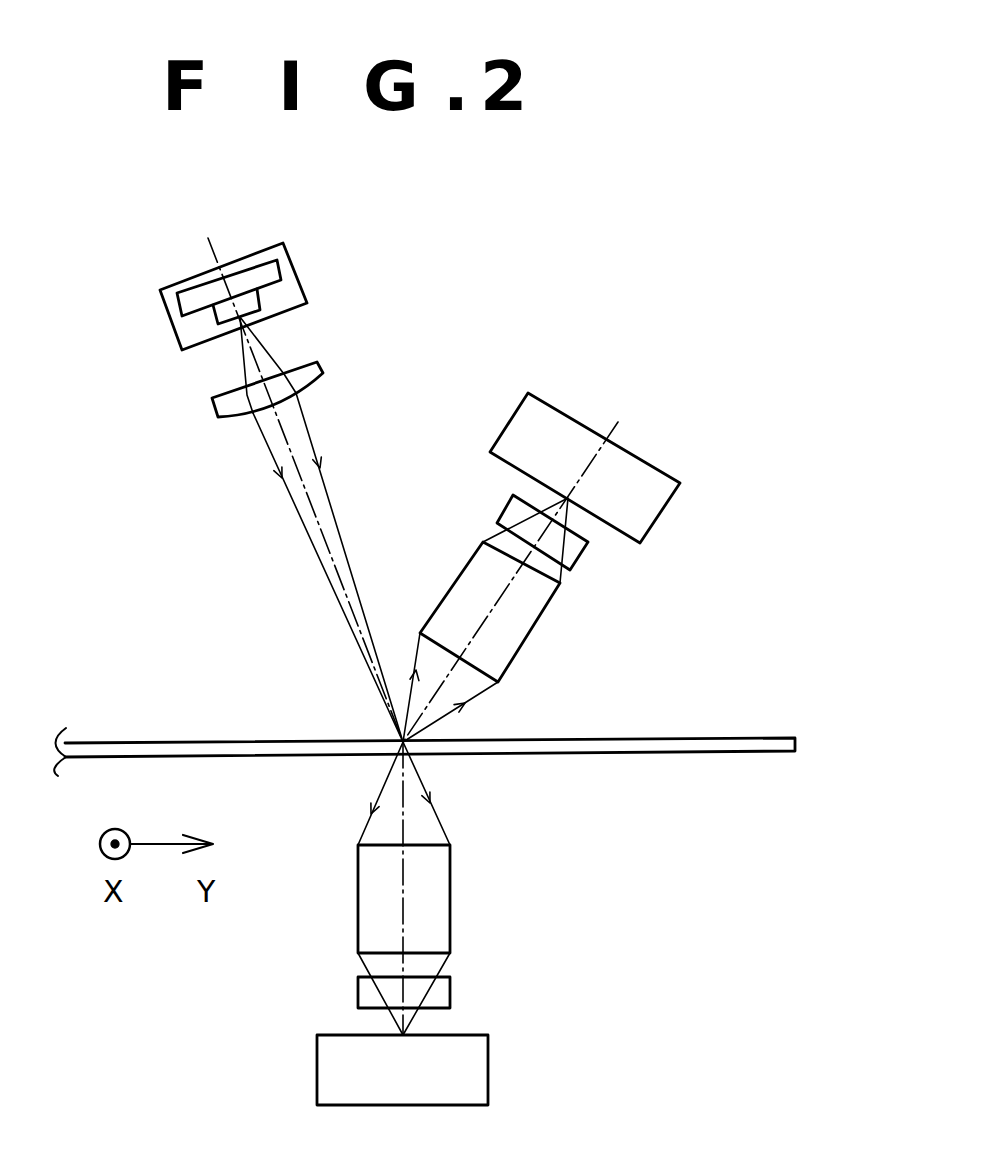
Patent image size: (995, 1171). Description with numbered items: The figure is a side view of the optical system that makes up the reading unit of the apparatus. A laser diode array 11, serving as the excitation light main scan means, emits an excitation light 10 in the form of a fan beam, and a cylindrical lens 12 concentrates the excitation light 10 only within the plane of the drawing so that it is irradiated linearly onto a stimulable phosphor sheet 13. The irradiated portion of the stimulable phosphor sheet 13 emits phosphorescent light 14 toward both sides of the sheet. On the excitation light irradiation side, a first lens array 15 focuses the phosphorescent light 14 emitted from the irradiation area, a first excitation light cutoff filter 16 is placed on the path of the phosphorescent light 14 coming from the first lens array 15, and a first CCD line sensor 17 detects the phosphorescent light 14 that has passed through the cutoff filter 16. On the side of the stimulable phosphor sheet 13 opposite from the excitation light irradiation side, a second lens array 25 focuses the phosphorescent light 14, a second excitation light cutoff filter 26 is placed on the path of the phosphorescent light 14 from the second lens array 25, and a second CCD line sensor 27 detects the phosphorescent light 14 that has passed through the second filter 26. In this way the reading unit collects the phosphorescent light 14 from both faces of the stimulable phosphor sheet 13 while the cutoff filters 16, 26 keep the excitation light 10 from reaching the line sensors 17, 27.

The excitation light 10 is at (273, 353).
The laser diode array 11 is at (297, 273).
The cylindrical lens 12 is at (313, 370).
The stimulable phosphor sheet 13 is at (722, 737).
The phosphorescent light 14 is at (483, 695).
The first lens array 15 is at (527, 623).
The first excitation light cutoff filter 16 is at (587, 562).
The first CCD line sensor 17 is at (660, 497).
The second lens array 25 is at (440, 897).
The second excitation light cutoff filter 26 is at (443, 995).
The second CCD line sensor 27 is at (473, 1078).